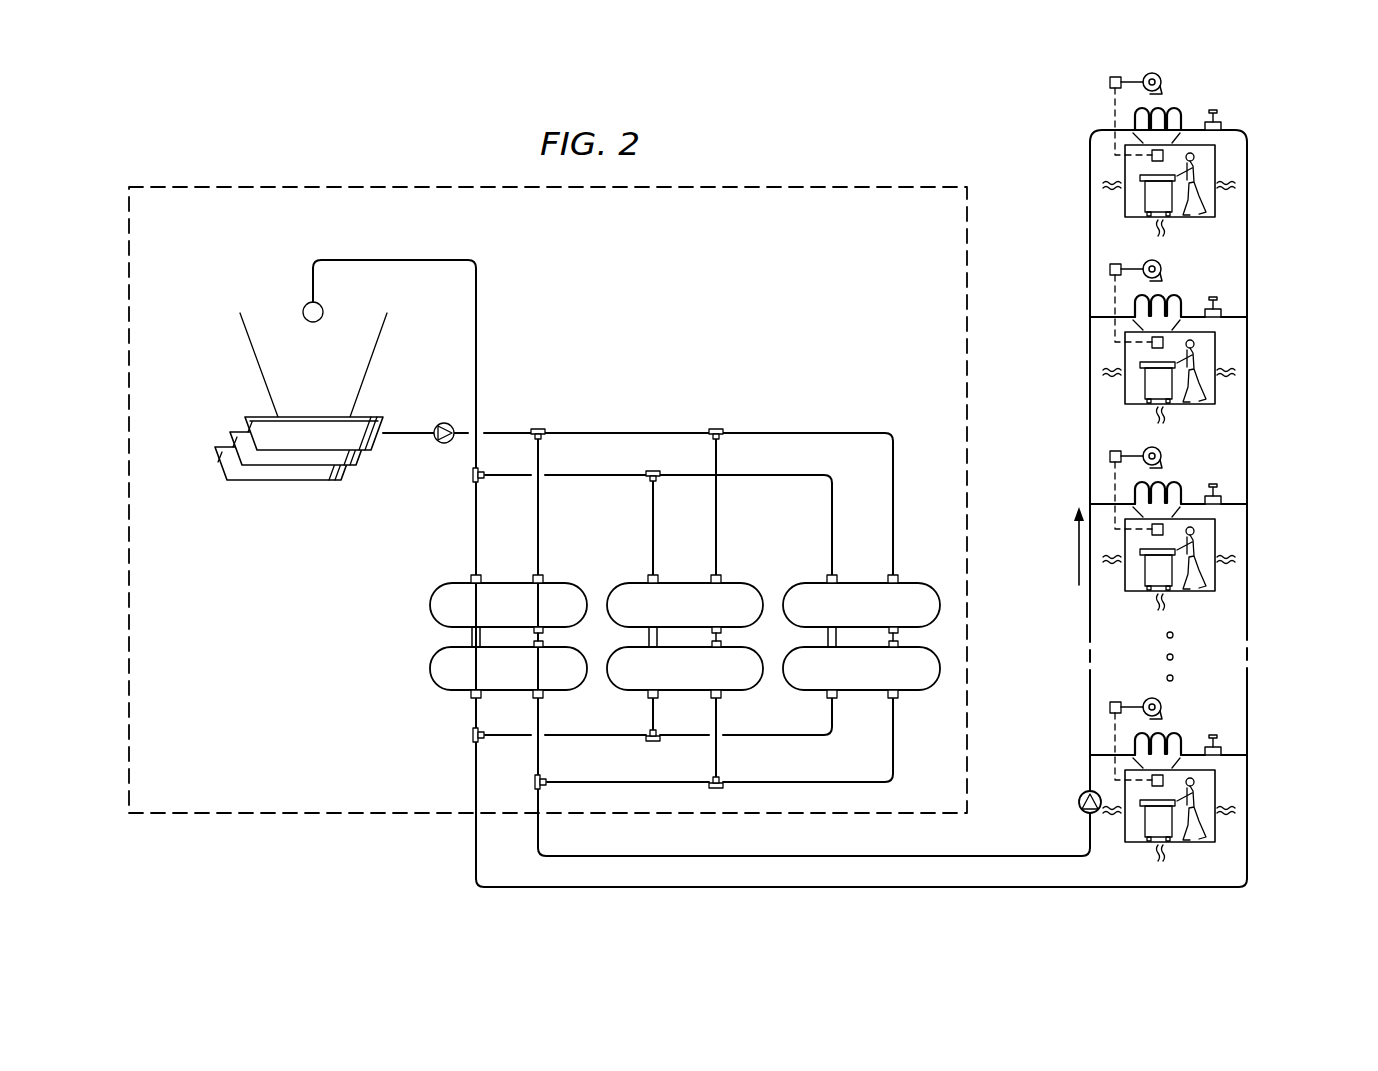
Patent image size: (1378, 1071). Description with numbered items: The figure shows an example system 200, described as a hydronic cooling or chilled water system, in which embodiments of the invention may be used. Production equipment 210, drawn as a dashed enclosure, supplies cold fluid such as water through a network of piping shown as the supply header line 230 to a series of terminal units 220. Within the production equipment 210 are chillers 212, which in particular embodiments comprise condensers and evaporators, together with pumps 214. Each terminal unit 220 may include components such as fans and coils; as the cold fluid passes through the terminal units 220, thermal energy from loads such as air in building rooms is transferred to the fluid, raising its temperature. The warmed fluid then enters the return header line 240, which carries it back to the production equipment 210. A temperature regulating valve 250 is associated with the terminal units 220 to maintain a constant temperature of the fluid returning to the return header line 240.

The system 200 is at (296, 106).
The production equipment 210 is at (413, 181).
The chillers 212 is at (415, 575).
The pumps 214 is at (206, 415).
The terminal units 220 is at (1108, 82).
The supply header line 230 is at (1088, 240).
The return header line 240 is at (1249, 240).
The temperature regulating valve 250 is at (1278, 119).